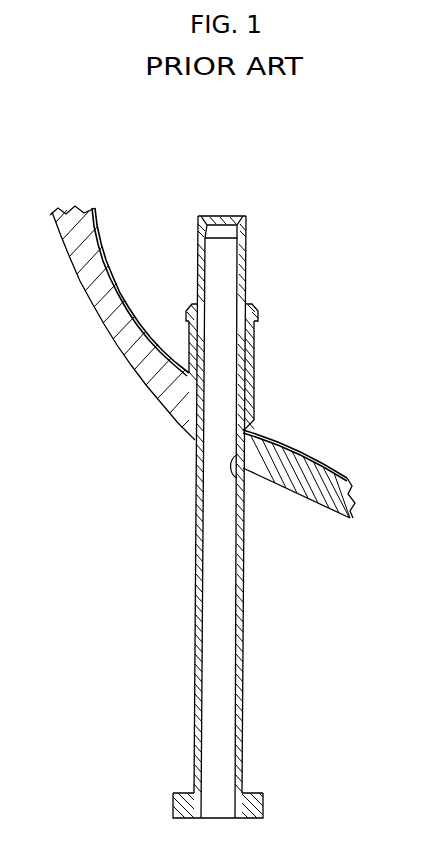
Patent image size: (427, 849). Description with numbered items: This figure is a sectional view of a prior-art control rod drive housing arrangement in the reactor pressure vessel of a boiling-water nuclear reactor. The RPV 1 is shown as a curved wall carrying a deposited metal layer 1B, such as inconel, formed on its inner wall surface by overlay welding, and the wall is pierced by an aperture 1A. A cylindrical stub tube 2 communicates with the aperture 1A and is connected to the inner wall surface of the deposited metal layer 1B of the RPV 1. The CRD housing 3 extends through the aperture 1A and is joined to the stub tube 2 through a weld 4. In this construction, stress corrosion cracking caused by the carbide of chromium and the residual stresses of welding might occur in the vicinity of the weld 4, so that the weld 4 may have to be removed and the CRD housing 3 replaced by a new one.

The RPV 1 is at (93, 305).
The aperture 1A is at (241, 479).
The deposited metal layer 1B is at (304, 463).
The stub tube 2 is at (254, 362).
The CRD housing 3 is at (199, 240).
The weld 4 is at (247, 307).